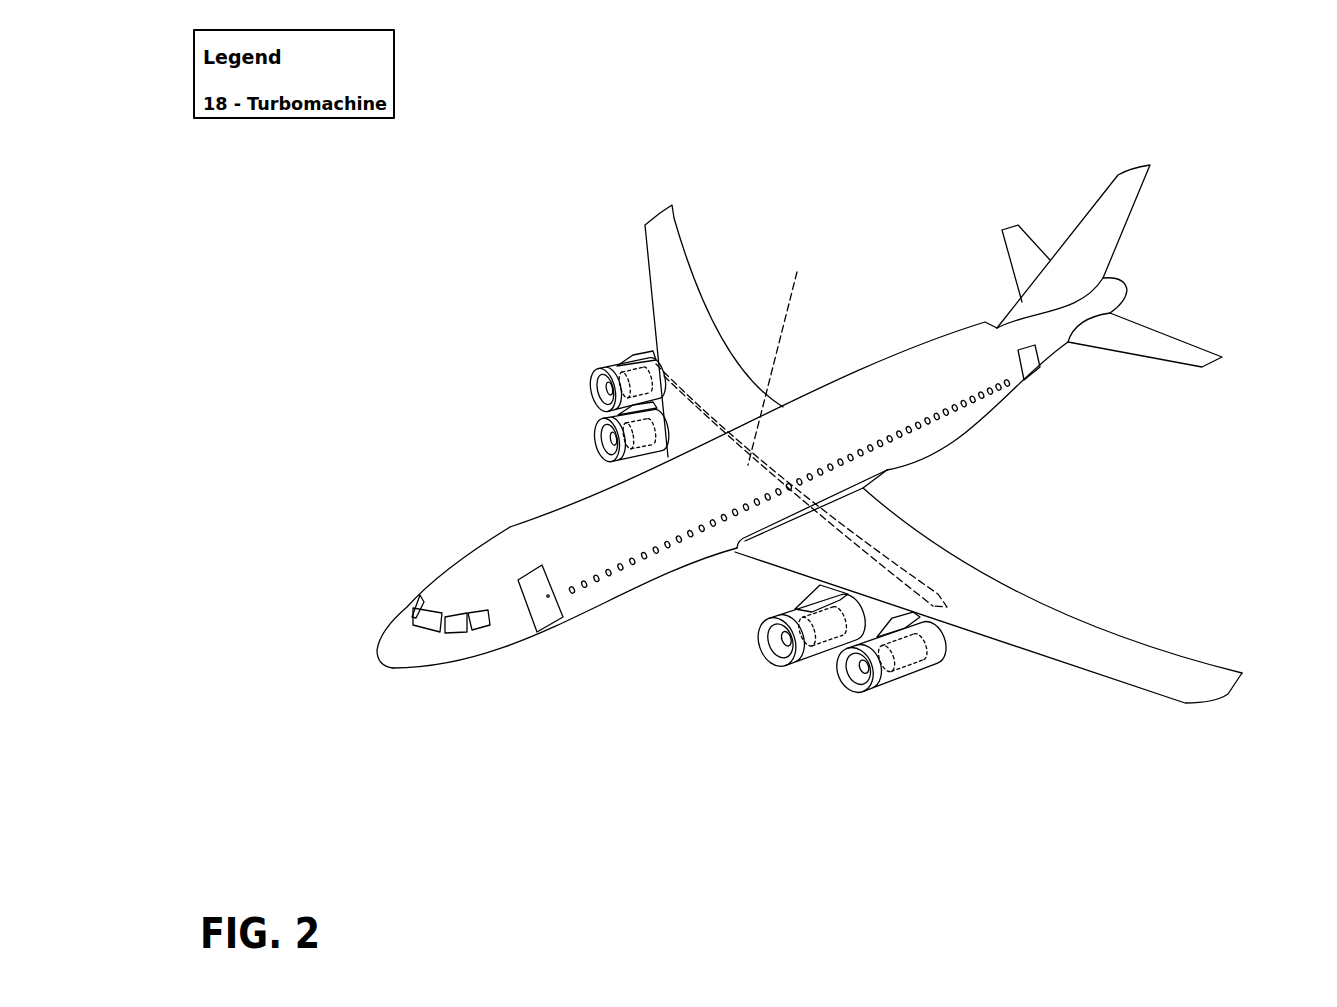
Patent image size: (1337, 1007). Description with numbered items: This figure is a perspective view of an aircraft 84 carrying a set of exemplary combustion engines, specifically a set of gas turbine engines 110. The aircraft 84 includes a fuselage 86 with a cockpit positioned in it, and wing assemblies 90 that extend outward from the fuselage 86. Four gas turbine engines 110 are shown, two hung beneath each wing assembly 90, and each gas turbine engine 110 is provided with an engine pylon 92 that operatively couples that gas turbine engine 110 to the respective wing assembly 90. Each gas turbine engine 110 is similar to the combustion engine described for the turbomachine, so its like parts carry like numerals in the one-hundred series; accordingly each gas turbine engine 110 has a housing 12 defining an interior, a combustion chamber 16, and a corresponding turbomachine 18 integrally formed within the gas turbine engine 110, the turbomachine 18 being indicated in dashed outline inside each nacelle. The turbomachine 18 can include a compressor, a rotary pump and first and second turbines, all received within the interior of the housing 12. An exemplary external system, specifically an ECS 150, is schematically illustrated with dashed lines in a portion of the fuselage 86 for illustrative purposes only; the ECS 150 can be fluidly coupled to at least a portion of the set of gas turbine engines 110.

The housing 12 is at (600, 470).
The combustion chamber 16 is at (475, 630).
The turbomachine 18 is at (627, 357).
The aircraft 84 is at (398, 536).
The fuselage 86 is at (819, 390).
The wing assembly 90 is at (663, 248).
The engine pylon 92 is at (645, 350).
The gas turbine engine 110 is at (607, 363).
The ECS 150 is at (781, 355).